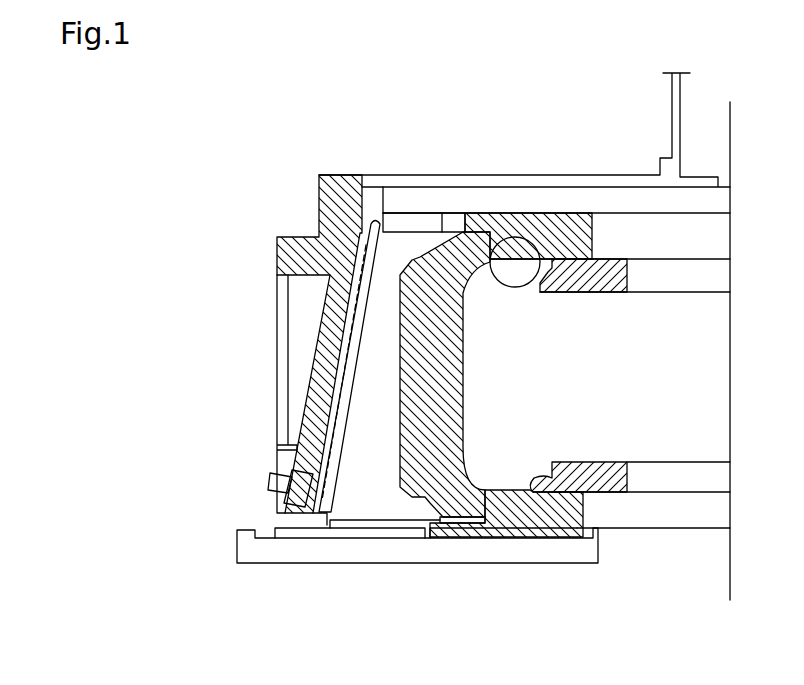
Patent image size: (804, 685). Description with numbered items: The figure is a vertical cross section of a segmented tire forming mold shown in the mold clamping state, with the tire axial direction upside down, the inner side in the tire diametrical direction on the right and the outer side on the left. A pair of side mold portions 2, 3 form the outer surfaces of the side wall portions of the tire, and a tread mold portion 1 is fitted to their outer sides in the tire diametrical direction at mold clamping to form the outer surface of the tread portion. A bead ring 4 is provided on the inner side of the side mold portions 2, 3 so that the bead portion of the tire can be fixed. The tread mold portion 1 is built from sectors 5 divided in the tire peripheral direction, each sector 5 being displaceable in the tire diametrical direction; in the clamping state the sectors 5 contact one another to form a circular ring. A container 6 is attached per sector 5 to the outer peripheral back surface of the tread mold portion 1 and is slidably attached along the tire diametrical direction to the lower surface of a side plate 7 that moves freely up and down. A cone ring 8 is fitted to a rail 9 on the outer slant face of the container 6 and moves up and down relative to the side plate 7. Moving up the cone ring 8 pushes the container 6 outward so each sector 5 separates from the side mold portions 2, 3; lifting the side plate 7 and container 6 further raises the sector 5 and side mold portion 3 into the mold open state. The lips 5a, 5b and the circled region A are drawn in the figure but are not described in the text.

The tread mold portion 1 is at (478, 432).
The side mold portion 2 is at (505, 537).
The side mold portion 3 is at (529, 232).
The bead ring 4 is at (614, 295).
The sector 5 is at (467, 346).
The upper seal lip 5a is at (474, 230).
The lower seal lip 5b is at (473, 520).
The container 6 is at (362, 500).
The side plate 7 is at (600, 198).
The cone ring 8 is at (292, 244).
The rail 9 is at (305, 456).
The enlarged portion A is at (516, 288).